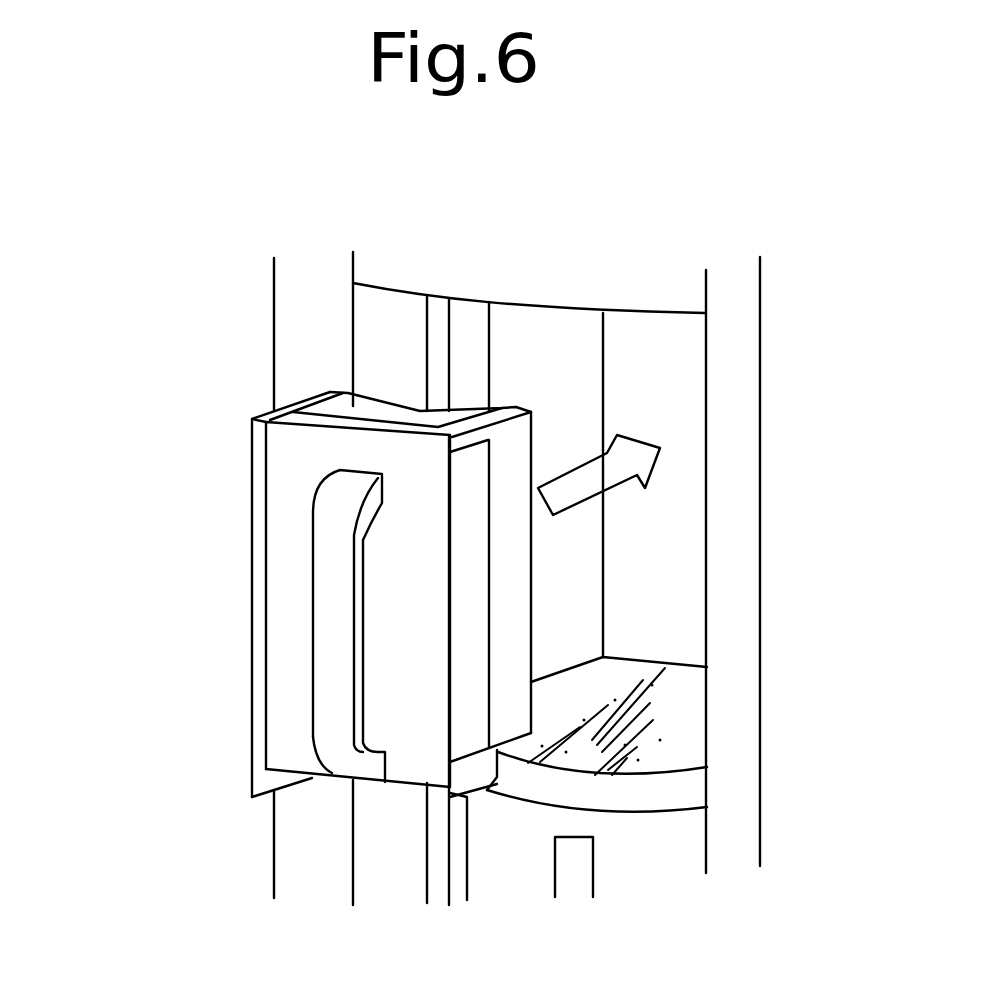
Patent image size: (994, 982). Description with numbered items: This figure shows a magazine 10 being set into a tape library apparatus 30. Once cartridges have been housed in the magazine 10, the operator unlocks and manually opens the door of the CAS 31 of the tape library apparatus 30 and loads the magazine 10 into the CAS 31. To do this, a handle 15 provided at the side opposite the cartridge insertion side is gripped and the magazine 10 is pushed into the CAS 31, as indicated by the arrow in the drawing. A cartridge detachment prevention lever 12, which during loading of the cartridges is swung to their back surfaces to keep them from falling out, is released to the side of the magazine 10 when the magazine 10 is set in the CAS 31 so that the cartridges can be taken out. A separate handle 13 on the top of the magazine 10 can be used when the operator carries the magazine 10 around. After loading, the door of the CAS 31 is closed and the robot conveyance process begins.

The magazine 10 is at (257, 485).
The cartridge detachment prevention lever 12 is at (528, 430).
The handle 13 is at (322, 408).
The handle 15 is at (328, 720).
The tape library apparatus 30 is at (778, 445).
The CAS 31 is at (652, 343).